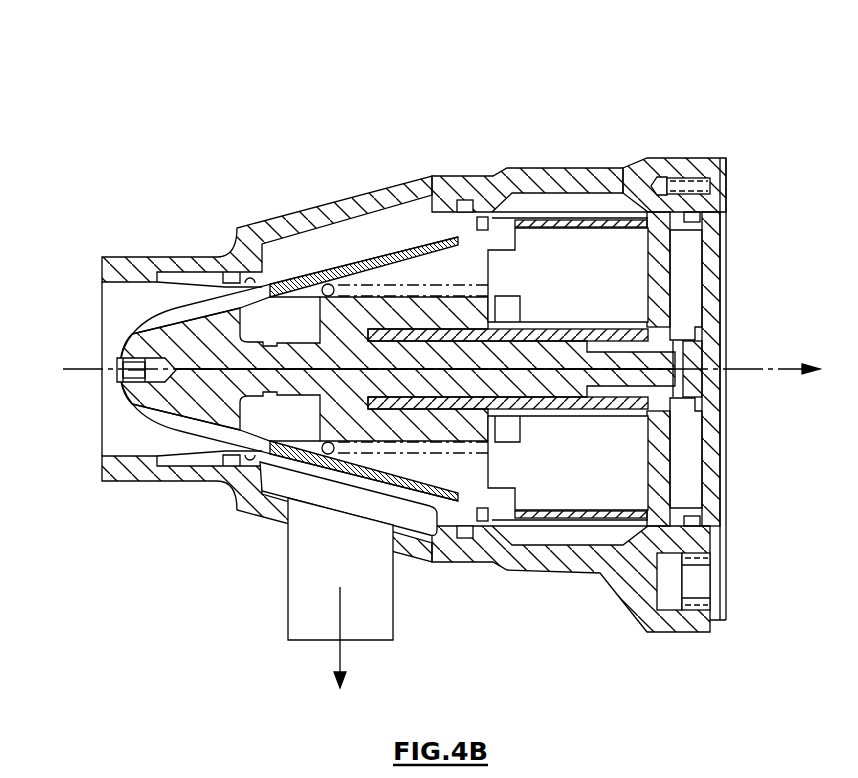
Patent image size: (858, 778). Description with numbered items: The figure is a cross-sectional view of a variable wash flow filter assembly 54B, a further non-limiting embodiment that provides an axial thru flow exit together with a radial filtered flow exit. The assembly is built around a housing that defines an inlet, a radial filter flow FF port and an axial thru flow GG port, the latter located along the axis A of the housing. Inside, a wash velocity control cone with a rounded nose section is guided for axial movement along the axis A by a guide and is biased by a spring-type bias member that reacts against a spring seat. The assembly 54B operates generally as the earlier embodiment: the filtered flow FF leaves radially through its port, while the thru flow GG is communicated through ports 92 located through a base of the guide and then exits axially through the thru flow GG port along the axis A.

The variable wash flow filter assembly 54B is at (490, 139).
The ports 92 is at (648, 264).
The axis A is at (80, 370).
The filtered flow FF is at (341, 655).
The thru flow GG is at (782, 372).